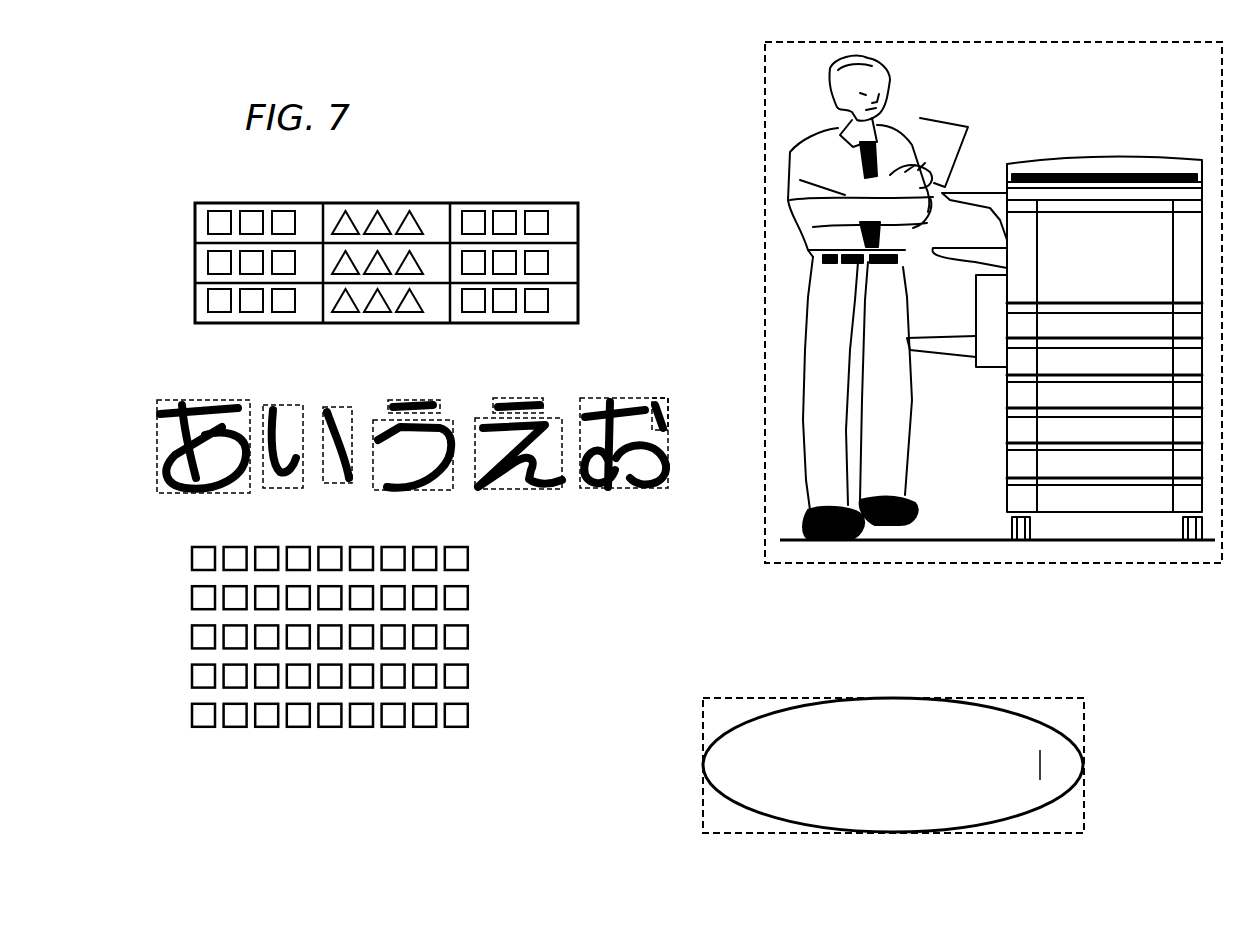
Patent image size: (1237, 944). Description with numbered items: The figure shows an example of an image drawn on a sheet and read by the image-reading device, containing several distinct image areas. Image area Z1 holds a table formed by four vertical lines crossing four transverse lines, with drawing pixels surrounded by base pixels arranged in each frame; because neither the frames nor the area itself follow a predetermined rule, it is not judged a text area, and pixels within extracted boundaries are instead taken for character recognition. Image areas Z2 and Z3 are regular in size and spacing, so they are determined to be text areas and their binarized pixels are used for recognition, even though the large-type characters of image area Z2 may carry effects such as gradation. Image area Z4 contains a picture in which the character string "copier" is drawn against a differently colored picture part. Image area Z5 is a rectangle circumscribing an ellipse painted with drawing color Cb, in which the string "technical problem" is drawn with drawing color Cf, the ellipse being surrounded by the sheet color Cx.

The image area Z1 is at (462, 200).
The image area Z2 is at (184, 400).
The image area Z3 is at (192, 555).
The image area Z4 is at (813, 564).
The image area Z5 is at (745, 698).
The drawing color Cf is at (918, 740).
The color of a sheet Cx is at (1043, 711).
The drawing color Cb is at (1052, 772).